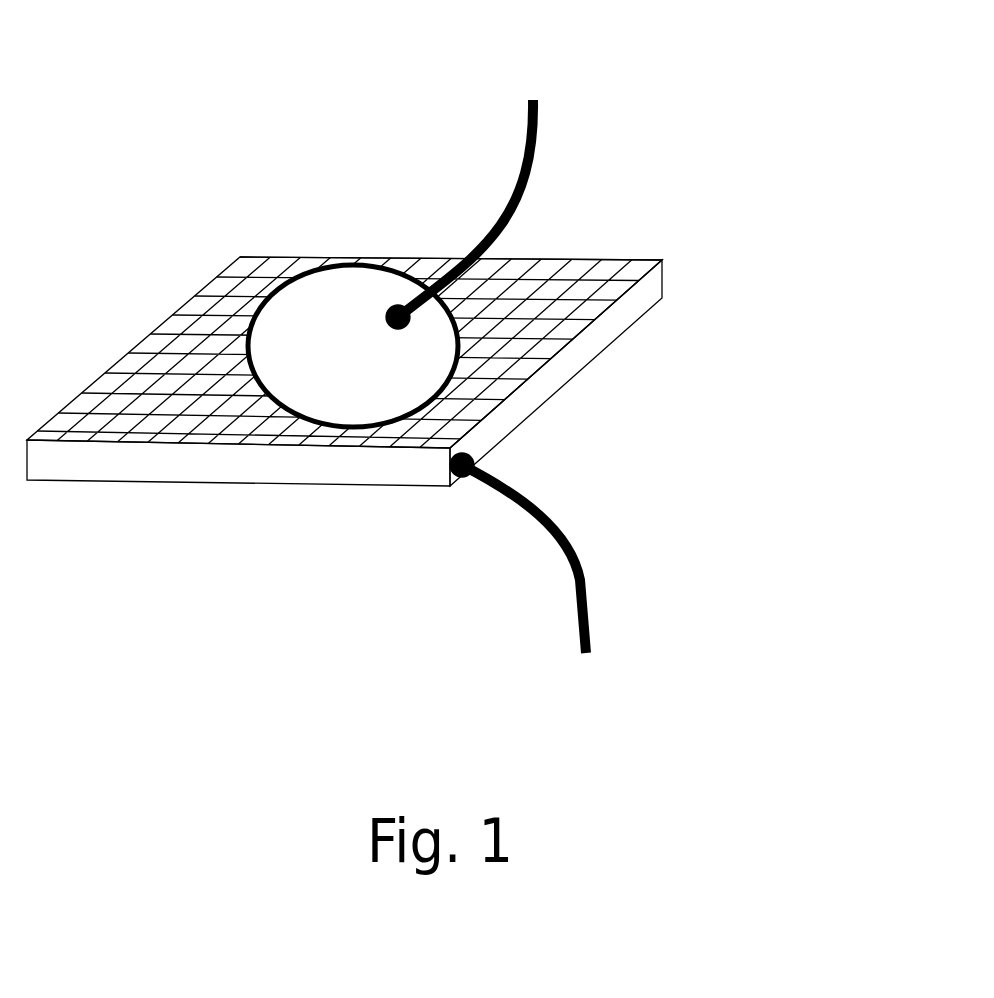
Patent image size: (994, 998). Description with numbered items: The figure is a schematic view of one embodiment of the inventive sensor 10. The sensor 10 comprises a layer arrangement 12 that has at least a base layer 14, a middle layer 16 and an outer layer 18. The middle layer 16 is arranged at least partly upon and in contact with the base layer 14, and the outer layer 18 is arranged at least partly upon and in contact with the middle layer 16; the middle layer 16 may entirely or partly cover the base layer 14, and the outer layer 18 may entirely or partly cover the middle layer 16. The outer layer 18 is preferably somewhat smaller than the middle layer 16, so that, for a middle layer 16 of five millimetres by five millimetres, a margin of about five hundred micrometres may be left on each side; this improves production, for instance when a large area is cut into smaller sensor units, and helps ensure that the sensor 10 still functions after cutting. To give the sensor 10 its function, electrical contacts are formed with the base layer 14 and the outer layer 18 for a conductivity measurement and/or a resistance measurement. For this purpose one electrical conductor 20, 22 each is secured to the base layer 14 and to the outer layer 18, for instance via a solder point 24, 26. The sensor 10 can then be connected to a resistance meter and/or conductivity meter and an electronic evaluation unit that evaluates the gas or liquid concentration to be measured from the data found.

The sensor 10 is at (738, 94).
The layer arrangement 12 is at (124, 243).
The base layer 14 is at (622, 317).
The middle layer 16 is at (608, 280).
The outer layer 18 is at (352, 292).
The electrical conductor 20 is at (528, 177).
The electrical conductor 22 is at (577, 557).
The solder point 24 is at (390, 300).
The solder point 26 is at (473, 463).